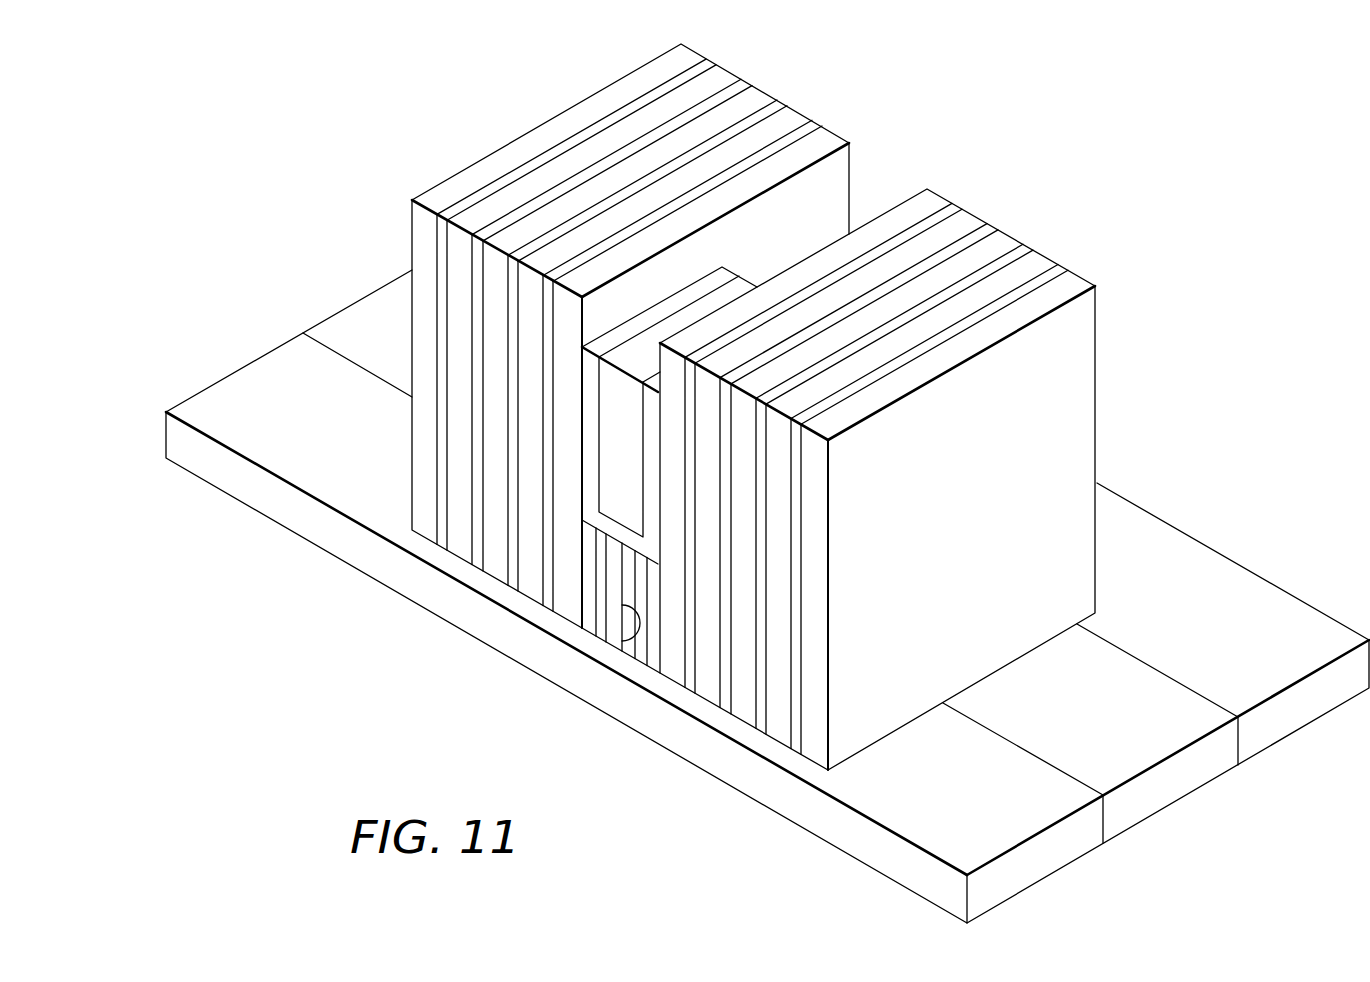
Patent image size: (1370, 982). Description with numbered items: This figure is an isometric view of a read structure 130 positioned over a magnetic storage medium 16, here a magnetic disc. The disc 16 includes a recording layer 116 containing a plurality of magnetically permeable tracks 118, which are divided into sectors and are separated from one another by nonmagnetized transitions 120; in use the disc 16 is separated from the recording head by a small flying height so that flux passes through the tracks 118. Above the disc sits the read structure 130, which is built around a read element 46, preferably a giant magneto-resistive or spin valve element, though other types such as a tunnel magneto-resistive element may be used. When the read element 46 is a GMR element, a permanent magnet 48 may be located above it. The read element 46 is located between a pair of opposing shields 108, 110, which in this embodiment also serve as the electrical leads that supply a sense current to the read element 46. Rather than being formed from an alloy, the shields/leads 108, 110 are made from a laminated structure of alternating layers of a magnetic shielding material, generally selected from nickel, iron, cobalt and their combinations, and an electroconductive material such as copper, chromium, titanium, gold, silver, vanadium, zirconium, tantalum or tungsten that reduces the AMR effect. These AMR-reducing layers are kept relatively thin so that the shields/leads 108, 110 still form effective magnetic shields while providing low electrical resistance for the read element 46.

The magnetic storage medium 16 is at (760, 572).
The read element 46 is at (620, 626).
The permanent magnet 48 is at (638, 454).
The shield 108 is at (987, 536).
The shield 110 is at (818, 231).
The recording layer 116 is at (1287, 540).
The magnetically permeable tracks 118 is at (985, 811).
The nonmagnetized transitions 120 is at (1125, 738).
The read structure 130 is at (947, 140).